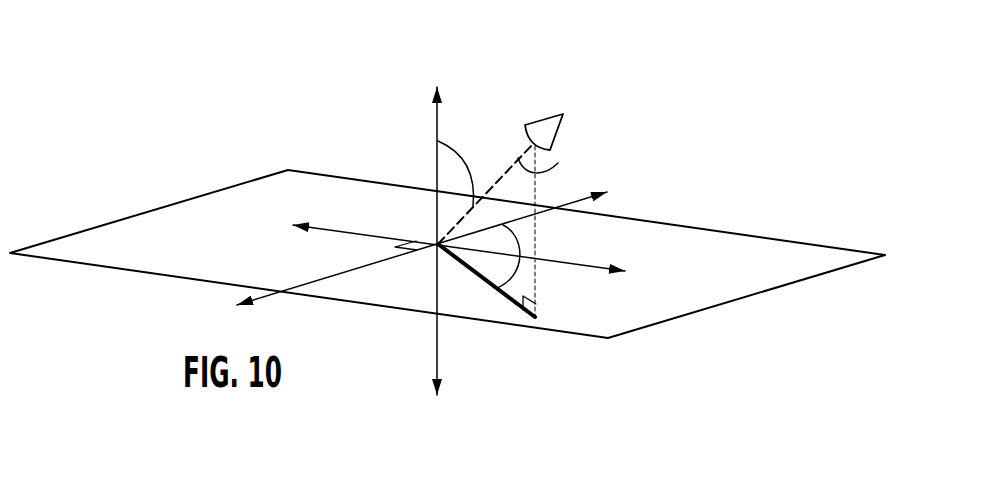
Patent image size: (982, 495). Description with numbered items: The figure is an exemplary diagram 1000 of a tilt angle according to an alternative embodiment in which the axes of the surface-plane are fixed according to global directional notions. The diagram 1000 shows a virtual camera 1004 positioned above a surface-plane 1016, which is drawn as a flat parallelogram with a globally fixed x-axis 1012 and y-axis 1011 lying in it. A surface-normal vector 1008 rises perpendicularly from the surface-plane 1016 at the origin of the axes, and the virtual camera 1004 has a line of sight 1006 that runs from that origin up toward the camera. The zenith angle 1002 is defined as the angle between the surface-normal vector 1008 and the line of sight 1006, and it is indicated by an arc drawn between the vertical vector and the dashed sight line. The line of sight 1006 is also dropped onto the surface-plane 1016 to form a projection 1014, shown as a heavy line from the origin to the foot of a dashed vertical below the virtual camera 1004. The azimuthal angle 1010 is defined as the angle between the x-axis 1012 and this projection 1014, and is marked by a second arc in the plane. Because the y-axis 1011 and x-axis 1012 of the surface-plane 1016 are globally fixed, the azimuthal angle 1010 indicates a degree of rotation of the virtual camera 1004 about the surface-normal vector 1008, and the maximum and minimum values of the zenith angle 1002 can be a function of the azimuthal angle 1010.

The diagram 1000 is at (245, 137).
The zenith angle 1002 is at (456, 155).
The virtual camera 1004 is at (561, 113).
The line of sight 1006 is at (558, 163).
The surface-normal vector 1008 is at (437, 123).
The azimuthal angle 1010 is at (515, 236).
The y-axis 1011 is at (334, 228).
The x-axis 1012 is at (603, 199).
The projection 1014 is at (497, 292).
The surface-plane 1016 is at (722, 257).